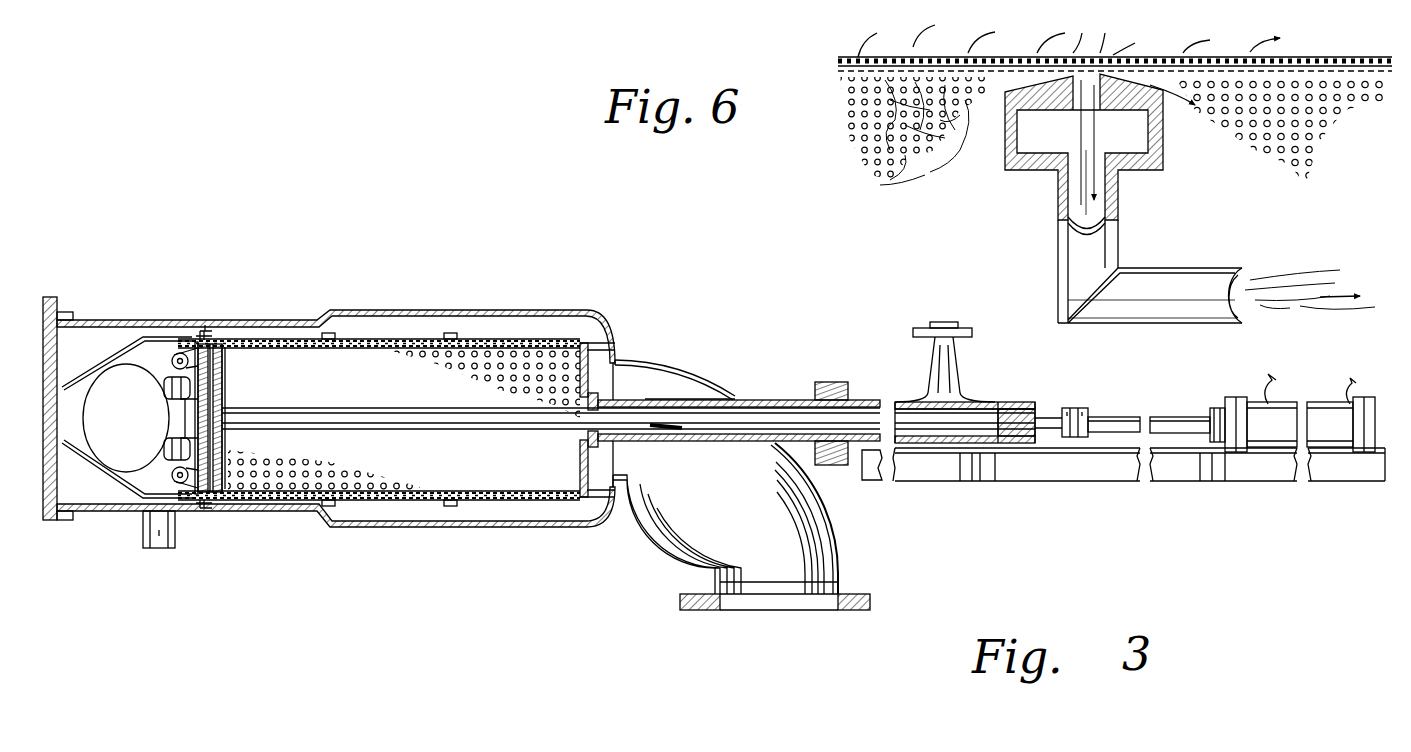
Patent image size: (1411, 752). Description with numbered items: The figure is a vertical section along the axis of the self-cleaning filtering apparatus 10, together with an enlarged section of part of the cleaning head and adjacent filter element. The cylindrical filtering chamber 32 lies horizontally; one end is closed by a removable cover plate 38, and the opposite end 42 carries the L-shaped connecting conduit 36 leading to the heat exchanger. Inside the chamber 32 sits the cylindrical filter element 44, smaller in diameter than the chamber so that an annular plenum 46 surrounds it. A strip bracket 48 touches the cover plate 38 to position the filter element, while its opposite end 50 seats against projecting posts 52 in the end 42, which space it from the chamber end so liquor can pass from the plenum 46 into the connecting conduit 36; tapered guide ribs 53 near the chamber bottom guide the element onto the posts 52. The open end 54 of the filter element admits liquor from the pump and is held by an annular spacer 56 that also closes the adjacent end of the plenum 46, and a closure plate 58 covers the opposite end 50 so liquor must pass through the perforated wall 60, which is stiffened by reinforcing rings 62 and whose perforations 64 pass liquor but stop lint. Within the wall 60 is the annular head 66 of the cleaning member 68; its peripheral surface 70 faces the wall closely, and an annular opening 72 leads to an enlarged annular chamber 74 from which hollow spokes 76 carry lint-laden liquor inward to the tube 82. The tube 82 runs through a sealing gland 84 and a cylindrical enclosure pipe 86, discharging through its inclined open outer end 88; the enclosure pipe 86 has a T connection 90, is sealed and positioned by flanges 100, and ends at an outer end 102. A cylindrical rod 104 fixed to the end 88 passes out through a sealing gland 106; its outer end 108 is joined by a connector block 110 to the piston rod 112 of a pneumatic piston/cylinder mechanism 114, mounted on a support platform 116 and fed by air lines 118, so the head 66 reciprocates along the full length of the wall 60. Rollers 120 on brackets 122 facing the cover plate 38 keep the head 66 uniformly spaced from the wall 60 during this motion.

In FIG. 3, the self-cleaning filtering apparatus 10 is at (752, 352).
In FIG. 3, the filtering chamber 32 is at (372, 311).
In FIG. 3, the connecting conduit 36 is at (838, 580).
In FIG. 3, the cover plate 38 is at (43, 520).
In FIG. 3, the end of the chamber 42 is at (612, 338).
In FIG. 3, the filter element 44 is at (430, 339).
In FIG. 6, the filter element 44 is at (1348, 57).
In FIG. 3, the annular plenum 46 is at (527, 311).
In FIG. 6, the annular plenum 46 is at (1252, 44).
In FIG. 3, the bracket 48 is at (80, 368).
In FIG. 3, the opposite end of the filter element 50 is at (598, 311).
In FIG. 3, the posts 52 is at (615, 360).
In FIG. 3, the tapered guide ribs 53 is at (548, 527).
In FIG. 3, the end of the filter element 54 is at (165, 417).
In FIG. 3, the annular spacer 56 is at (210, 331).
In FIG. 3, the closure plate 58 is at (614, 463).
In FIG. 3, the wall of the filter element 60 is at (398, 339).
In FIG. 6, the wall of the filter element 60 is at (1296, 57).
In FIG. 3, the reinforcing rings 62 is at (330, 333).
In FIG. 3, the perforations 64 is at (500, 370).
In FIG. 6, the perforations 64 is at (1270, 128).
In FIG. 3, the annular head 66 is at (224, 380).
In FIG. 6, the annular head 66 is at (1168, 140).
In FIG. 3, the cleaning member 68 is at (230, 403).
In FIG. 6, the cleaning member 68 is at (1118, 242).
In FIG. 3, the annular peripheral surface 70 is at (212, 352).
In FIG. 6, the annular peripheral surface 70 is at (1025, 58).
In FIG. 3, the annular opening 72 is at (222, 440).
In FIG. 6, the annular opening 72 is at (1110, 72).
In FIG. 6, the annular chamber 74 is at (1040, 137).
In FIG. 6, the hollow spokes 76 is at (1118, 200).
In FIG. 3, the tube 82 is at (385, 408).
In FIG. 6, the tube 82 is at (1193, 268).
In FIG. 3, the sealing gland 84 is at (620, 402).
In FIG. 3, the enclosure pipe 86 is at (862, 400).
In FIG. 3, the open outer end of the tube 88 is at (665, 400).
In FIG. 3, the T connection 90 is at (958, 372).
In FIG. 3, the flanges 100 is at (828, 382).
In FIG. 3, the outer end of the enclosure pipe 102 is at (1005, 400).
In FIG. 3, the cylindrical rod 104 is at (755, 400).
In FIG. 3, the sealing gland 106 is at (1040, 404).
In FIG. 3, the outer end of the rod 108 is at (1075, 407).
In FIG. 3, the connector block 110 is at (1112, 417).
In FIG. 3, the piston rod 112 is at (1175, 415).
In FIG. 3, the pneumatic piston/cylinder mechanism 114 is at (1285, 402).
In FIG. 3, the base rail 116 is at (1085, 481).
In FIG. 3, the air lines 118 is at (1278, 384).
In FIG. 3, the rollers 120 is at (164, 392).
In FIG. 3, the brackets 122 is at (188, 404).